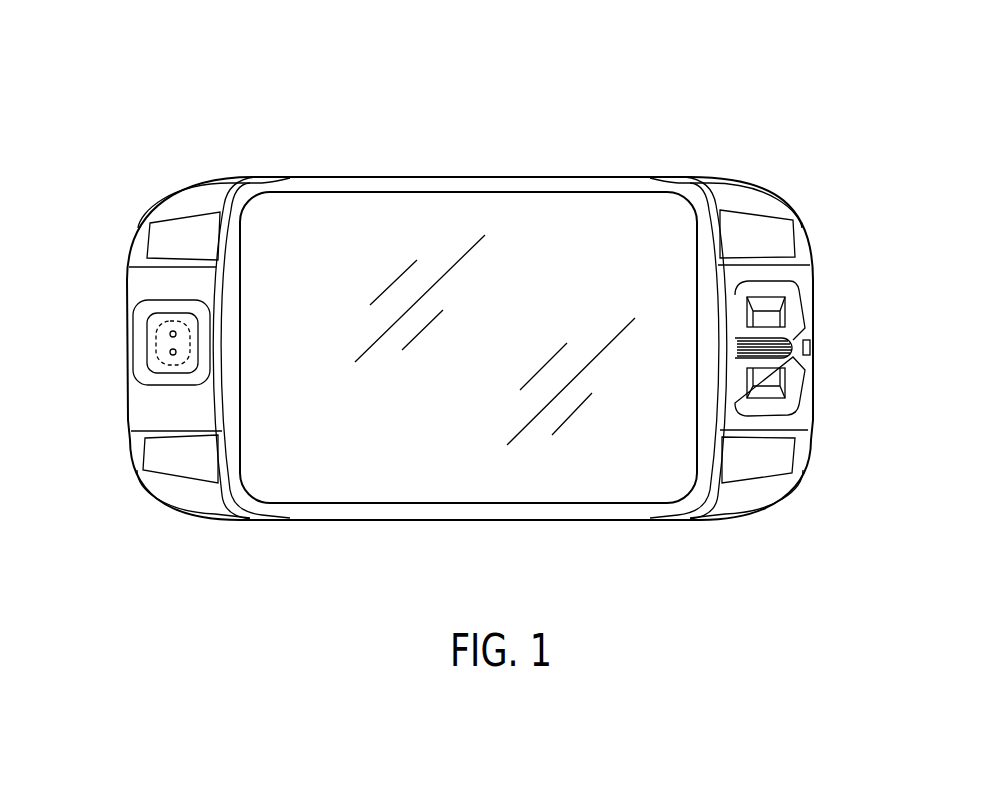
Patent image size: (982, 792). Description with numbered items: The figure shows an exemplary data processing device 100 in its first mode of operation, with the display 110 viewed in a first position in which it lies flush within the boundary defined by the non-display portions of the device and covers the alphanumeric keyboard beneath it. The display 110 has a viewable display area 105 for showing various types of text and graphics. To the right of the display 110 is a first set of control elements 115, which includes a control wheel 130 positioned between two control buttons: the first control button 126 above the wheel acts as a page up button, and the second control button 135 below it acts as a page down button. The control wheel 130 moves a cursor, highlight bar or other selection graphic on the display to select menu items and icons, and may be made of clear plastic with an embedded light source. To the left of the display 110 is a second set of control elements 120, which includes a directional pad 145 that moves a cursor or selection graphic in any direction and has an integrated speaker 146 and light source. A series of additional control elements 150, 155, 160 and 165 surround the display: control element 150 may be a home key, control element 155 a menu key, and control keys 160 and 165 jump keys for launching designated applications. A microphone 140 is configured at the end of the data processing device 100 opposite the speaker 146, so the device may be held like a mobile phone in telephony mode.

The data processing device 100 is at (125, 95).
The viewable display area 105 is at (398, 476).
The display 110 is at (447, 184).
The first set of control elements 115 is at (823, 182).
The second set of control elements 120 is at (100, 183).
The first control button 126 is at (765, 313).
The control wheel 130 is at (780, 350).
The second control button 135 is at (767, 387).
The microphone 140 is at (811, 344).
The directional pad 145 is at (170, 343).
The speaker 146 is at (165, 325).
The control element 150 is at (766, 248).
The control element 155 is at (767, 470).
The control key 160 is at (194, 248).
The control key 165 is at (194, 465).